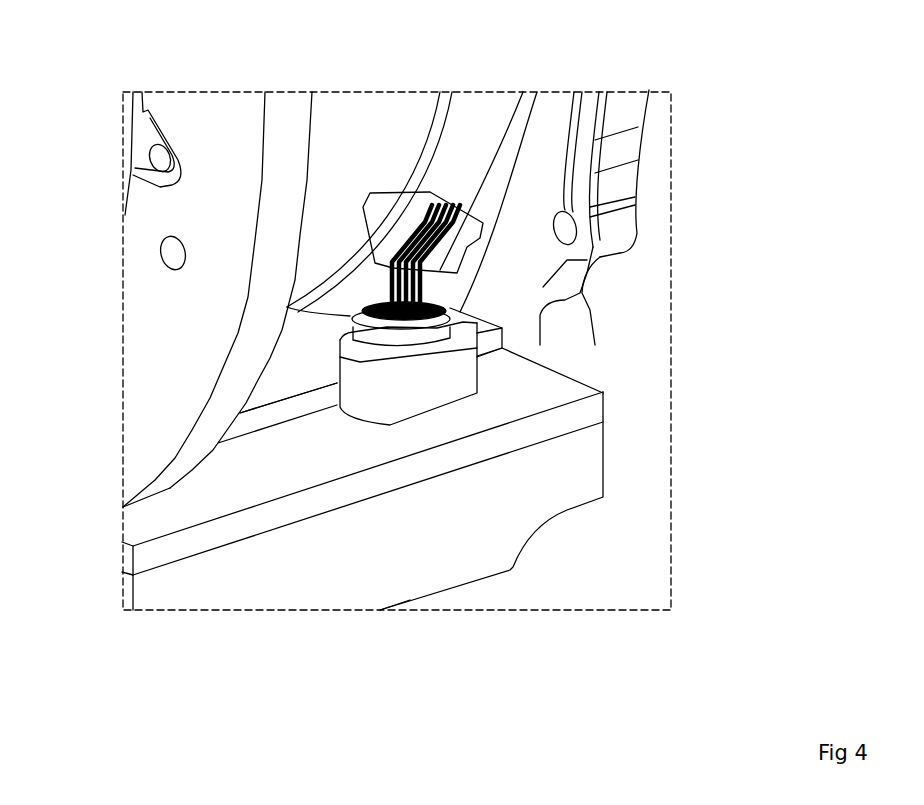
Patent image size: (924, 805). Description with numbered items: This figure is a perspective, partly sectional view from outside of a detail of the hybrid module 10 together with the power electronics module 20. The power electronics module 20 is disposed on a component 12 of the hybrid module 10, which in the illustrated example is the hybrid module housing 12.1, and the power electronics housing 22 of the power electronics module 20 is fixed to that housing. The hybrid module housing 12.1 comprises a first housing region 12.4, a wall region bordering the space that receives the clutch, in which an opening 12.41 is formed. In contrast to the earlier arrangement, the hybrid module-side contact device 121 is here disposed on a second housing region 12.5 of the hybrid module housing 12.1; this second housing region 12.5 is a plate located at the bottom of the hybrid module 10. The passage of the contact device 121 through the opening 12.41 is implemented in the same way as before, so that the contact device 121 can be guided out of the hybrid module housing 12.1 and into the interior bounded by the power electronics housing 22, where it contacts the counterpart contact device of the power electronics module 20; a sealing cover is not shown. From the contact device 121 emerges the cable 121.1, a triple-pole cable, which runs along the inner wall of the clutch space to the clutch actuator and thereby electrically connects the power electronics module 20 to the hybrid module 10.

The hybrid module 10 is at (641, 74).
The component of the hybrid module 12 is at (398, 125).
The hybrid module housing 12.1 is at (412, 174).
The first housing region 12.4 is at (475, 179).
The opening 12.41 is at (455, 229).
The second housing region 12.5 is at (320, 453).
The hybrid module-side contact device 121 is at (453, 377).
The cable 121.1 is at (415, 256).
The power electronics module 20 is at (589, 582).
The power electronics housing 22 is at (523, 500).